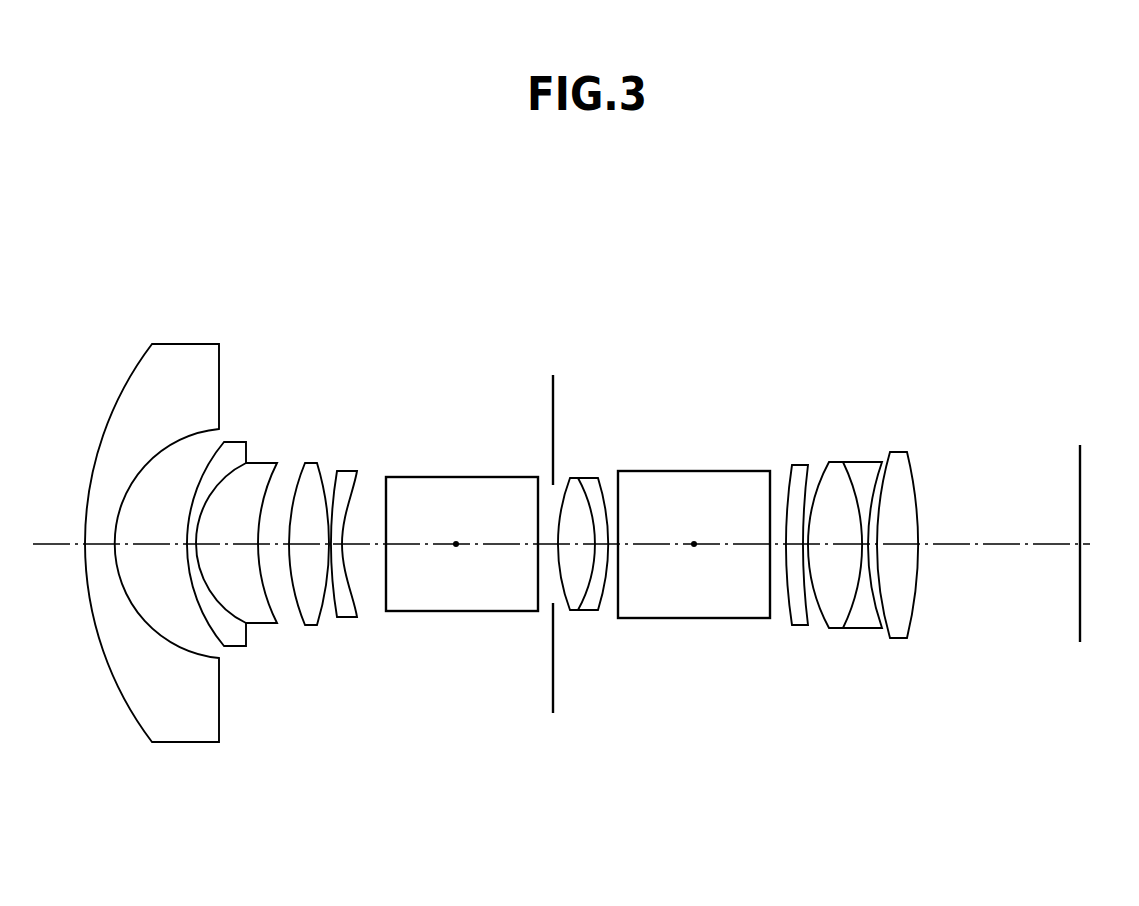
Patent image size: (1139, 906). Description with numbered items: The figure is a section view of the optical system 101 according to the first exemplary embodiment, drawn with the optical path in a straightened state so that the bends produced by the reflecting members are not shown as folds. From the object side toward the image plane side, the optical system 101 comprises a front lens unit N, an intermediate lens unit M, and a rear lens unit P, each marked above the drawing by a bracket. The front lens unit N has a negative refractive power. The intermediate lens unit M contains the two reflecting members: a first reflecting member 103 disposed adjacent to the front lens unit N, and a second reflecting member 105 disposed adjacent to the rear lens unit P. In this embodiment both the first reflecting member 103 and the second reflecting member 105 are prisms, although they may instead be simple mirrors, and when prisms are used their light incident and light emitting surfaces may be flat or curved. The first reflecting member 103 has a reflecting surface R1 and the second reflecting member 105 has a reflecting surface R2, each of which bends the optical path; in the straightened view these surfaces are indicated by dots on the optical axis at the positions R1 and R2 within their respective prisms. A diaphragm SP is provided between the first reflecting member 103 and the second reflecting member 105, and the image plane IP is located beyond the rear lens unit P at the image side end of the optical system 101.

The optical system 101 is at (437, 166).
The front lens unit N is at (78, 320).
The intermediate lens unit M is at (383, 320).
The rear lens unit P is at (781, 320).
The first reflecting member 103 is at (500, 604).
The second reflecting member 105 is at (738, 604).
The reflecting surface R1 is at (456, 548).
The reflecting surface R2 is at (694, 548).
The diaphragm SP is at (552, 400).
The image plane IP is at (1082, 462).